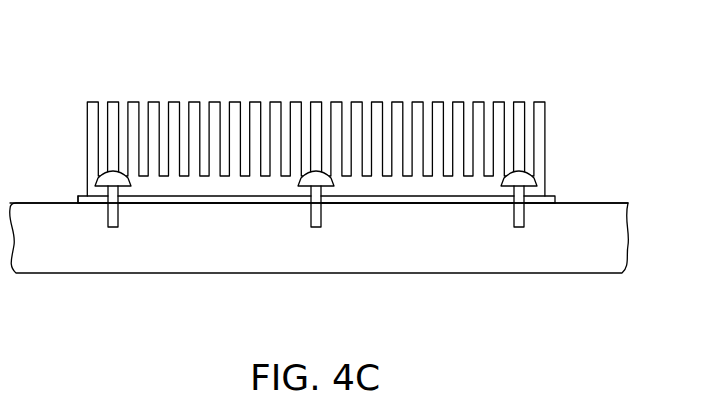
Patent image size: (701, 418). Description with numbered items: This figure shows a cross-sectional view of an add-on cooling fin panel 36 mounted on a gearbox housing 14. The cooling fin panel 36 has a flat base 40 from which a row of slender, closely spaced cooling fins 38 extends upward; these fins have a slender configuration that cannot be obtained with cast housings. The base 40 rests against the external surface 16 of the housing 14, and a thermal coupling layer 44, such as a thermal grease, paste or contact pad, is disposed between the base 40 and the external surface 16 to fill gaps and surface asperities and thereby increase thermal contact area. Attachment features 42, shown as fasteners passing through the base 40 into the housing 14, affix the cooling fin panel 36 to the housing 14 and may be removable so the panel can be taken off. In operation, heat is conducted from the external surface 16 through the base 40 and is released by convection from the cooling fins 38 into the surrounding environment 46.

The cooling fin panel 36 is at (597, 80).
The housing 14 is at (333, 263).
The external surface 16 is at (615, 203).
The base 40 is at (545, 190).
The thermal coupling layer 44 is at (78, 197).
The environment 46 is at (332, 47).
The cooling fins 38 is at (94, 103).
The attachment features 42 is at (121, 222).